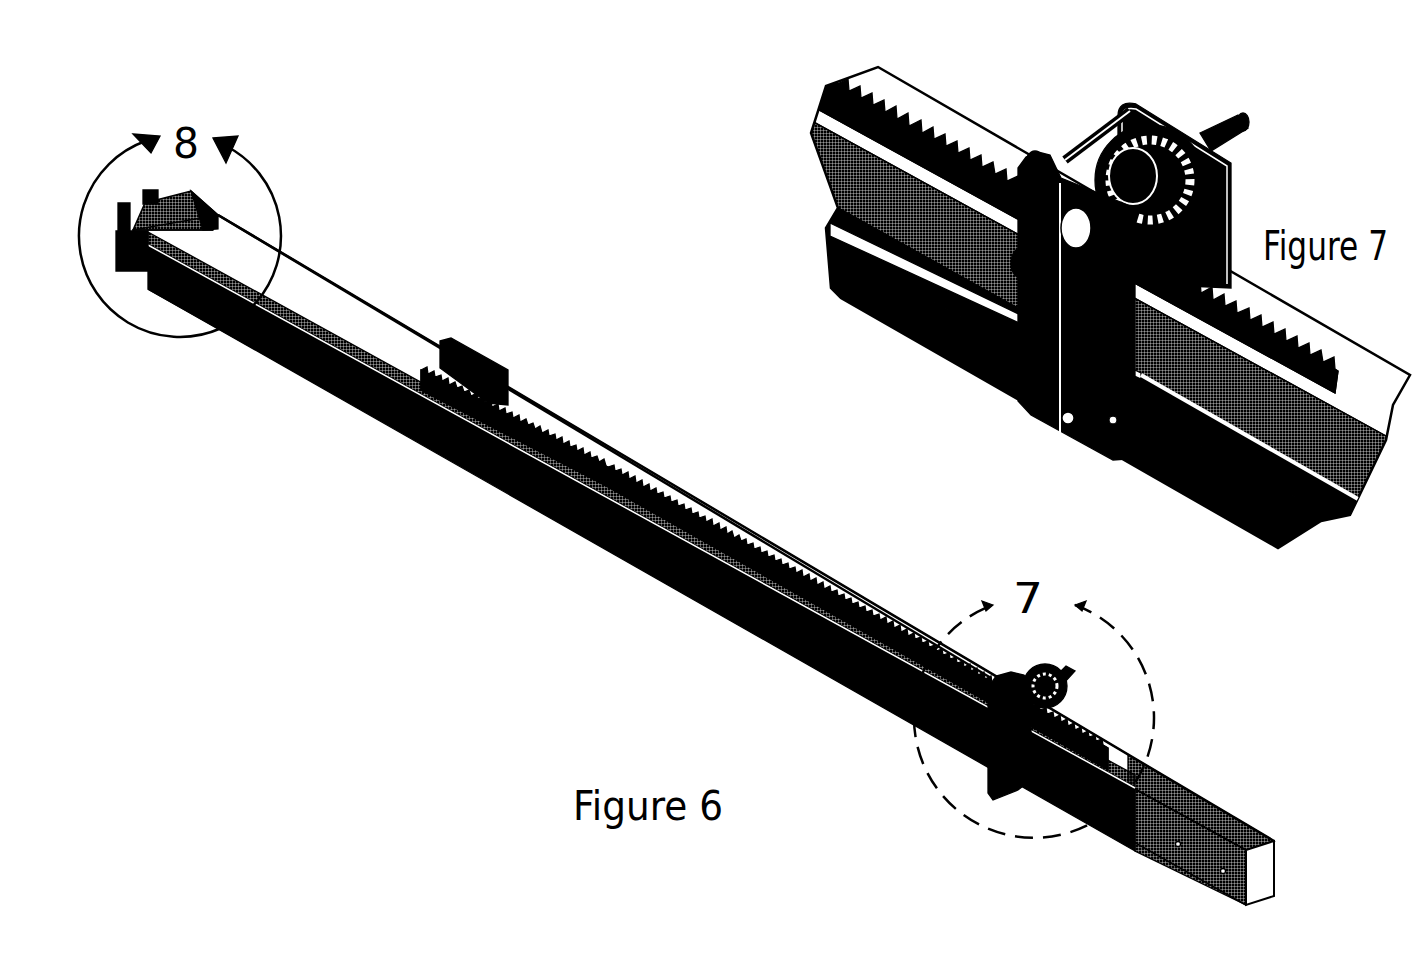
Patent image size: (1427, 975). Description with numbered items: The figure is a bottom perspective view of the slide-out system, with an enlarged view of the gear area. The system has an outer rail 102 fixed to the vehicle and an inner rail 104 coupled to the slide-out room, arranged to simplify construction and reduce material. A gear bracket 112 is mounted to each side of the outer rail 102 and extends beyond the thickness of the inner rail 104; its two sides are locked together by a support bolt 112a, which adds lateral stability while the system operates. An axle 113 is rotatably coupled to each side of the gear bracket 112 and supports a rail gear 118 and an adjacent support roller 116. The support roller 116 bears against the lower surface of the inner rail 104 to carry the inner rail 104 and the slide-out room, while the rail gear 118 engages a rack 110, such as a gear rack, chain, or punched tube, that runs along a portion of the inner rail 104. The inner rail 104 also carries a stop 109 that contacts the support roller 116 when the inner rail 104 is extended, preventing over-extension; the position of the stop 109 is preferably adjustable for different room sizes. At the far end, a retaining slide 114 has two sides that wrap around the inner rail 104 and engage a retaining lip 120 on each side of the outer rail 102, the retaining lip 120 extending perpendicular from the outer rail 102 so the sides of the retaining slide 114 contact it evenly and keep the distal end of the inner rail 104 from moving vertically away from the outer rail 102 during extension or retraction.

In FIG. 6, the outer rail 102 is at (457, 464).
In FIG. 7, the outer rail 102 is at (868, 305).
In FIG. 6, the inner rail 104 is at (356, 308).
In FIG. 6, the stop 109 is at (466, 350).
In FIG. 6, the rack 110 is at (608, 465).
In FIG. 7, the rack 110 is at (950, 127).
In FIG. 6, the gear bracket 112 is at (998, 728).
In FIG. 7, the gear bracket 112 is at (1012, 385).
In FIG. 7, the support bolt 112a is at (1112, 93).
In FIG. 6, the axle 113 is at (983, 690).
In FIG. 7, the axle 113 is at (922, 338).
In FIG. 6, the retaining slide 114 is at (210, 207).
In FIG. 6, the support roller 116 is at (1035, 660).
In FIG. 7, the support roller 116 is at (1167, 112).
In FIG. 6, the rail gear 118 is at (1002, 672).
In FIG. 7, the rail gear 118 is at (1087, 150).
In FIG. 6, the retaining lip 120 is at (650, 566).
In FIG. 7, the retaining lip 120 is at (822, 218).